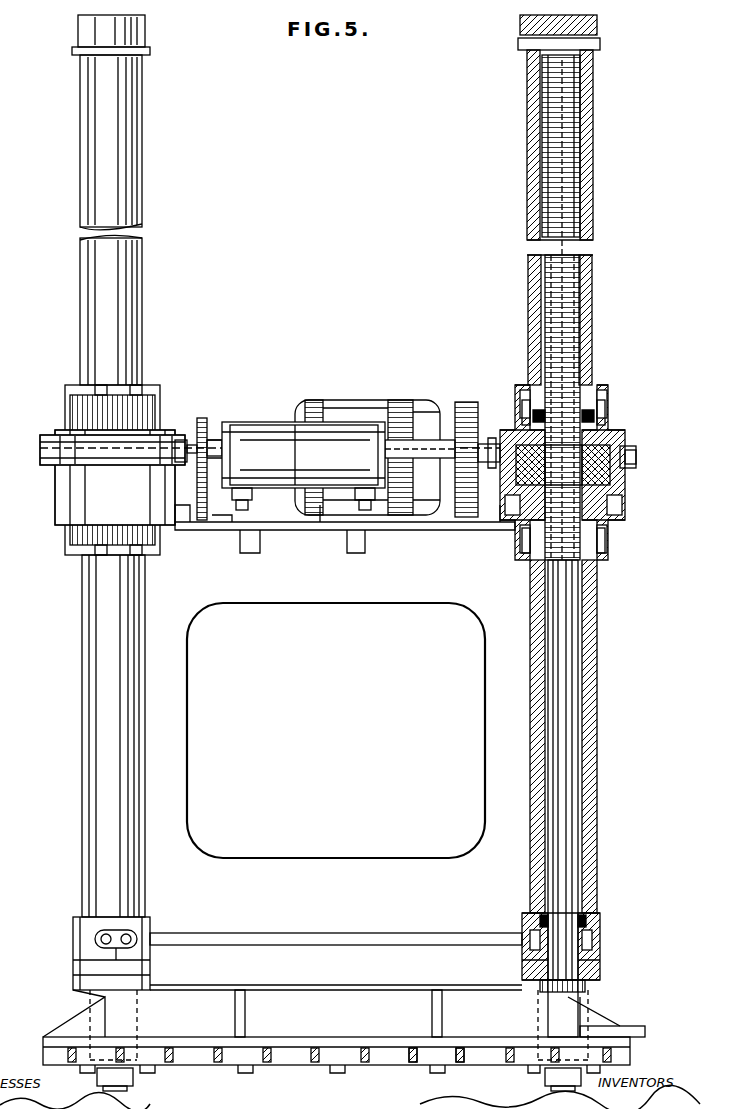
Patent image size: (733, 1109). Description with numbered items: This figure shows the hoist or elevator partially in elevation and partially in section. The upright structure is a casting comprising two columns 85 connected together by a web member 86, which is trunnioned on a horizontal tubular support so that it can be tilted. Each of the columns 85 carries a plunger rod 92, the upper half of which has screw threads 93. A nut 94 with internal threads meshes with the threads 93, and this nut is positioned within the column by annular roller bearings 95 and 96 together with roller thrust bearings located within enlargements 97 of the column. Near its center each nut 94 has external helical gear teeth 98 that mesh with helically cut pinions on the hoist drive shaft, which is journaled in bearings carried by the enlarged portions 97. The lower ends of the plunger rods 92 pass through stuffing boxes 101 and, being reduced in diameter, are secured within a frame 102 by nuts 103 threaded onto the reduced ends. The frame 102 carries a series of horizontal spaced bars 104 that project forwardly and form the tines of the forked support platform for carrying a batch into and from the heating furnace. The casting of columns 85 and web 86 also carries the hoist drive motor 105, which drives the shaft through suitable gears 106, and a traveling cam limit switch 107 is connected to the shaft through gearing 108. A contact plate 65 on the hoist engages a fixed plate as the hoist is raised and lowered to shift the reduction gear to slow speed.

The contact plate 65 is at (642, 1031).
The columns 85 is at (86, 752).
The web member 86 is at (327, 860).
The plunger rod 92 is at (566, 646).
The screw threads 93 is at (580, 318).
The nut 94 is at (612, 480).
The annular roller bearing 95 is at (606, 400).
The annular roller bearing 96 is at (607, 540).
The enlargement of column 97 is at (626, 494).
The external helical gear teeth 98 is at (628, 444).
The stuffing box 101 is at (600, 945).
The frame 102 is at (293, 1042).
The nut 103 is at (132, 1082).
The horizontal spaced bars 104 is at (448, 1049).
The hoist drive motor 105 is at (391, 402).
The gears 106 is at (469, 402).
The traveling cam limit switch 107 is at (268, 422).
The gearing 108 is at (205, 420).